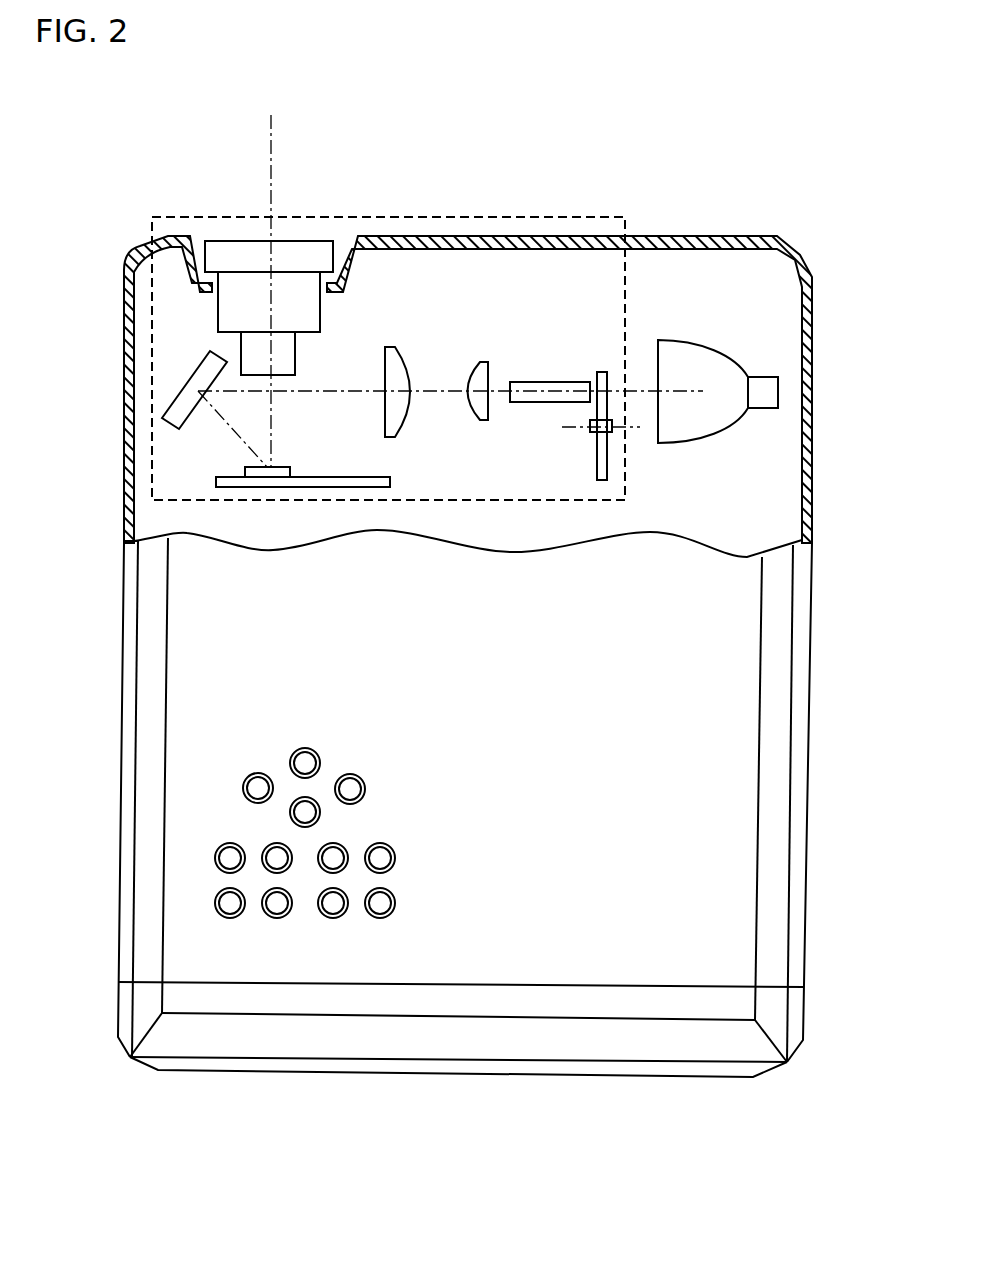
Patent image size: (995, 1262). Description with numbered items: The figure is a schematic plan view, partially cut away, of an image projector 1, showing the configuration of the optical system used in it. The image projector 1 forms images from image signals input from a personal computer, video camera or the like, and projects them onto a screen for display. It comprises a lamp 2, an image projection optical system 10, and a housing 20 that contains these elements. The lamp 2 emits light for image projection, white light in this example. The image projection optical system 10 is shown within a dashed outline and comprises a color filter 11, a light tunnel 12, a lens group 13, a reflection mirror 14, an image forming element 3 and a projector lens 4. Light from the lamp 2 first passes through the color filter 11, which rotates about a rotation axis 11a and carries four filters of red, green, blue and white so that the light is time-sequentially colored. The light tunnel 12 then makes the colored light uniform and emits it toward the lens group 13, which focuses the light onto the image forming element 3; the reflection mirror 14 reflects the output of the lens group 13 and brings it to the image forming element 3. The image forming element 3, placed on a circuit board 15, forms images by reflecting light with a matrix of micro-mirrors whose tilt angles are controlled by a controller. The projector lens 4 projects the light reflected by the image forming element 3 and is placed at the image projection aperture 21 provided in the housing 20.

The image projector 1 is at (470, 80).
The lamp 2 is at (698, 380).
The image forming element 3 is at (276, 467).
The projector lens 4 is at (250, 260).
The image projection optical system 10 is at (540, 217).
The color filter 11 is at (600, 375).
The rotation axis 11a is at (575, 432).
The light tunnel 12 is at (555, 385).
The lens group 13 is at (478, 375).
The reflection mirror 14 is at (196, 397).
The circuit board 15 is at (350, 477).
The housing 20 is at (728, 647).
The image projection aperture 21 is at (341, 248).